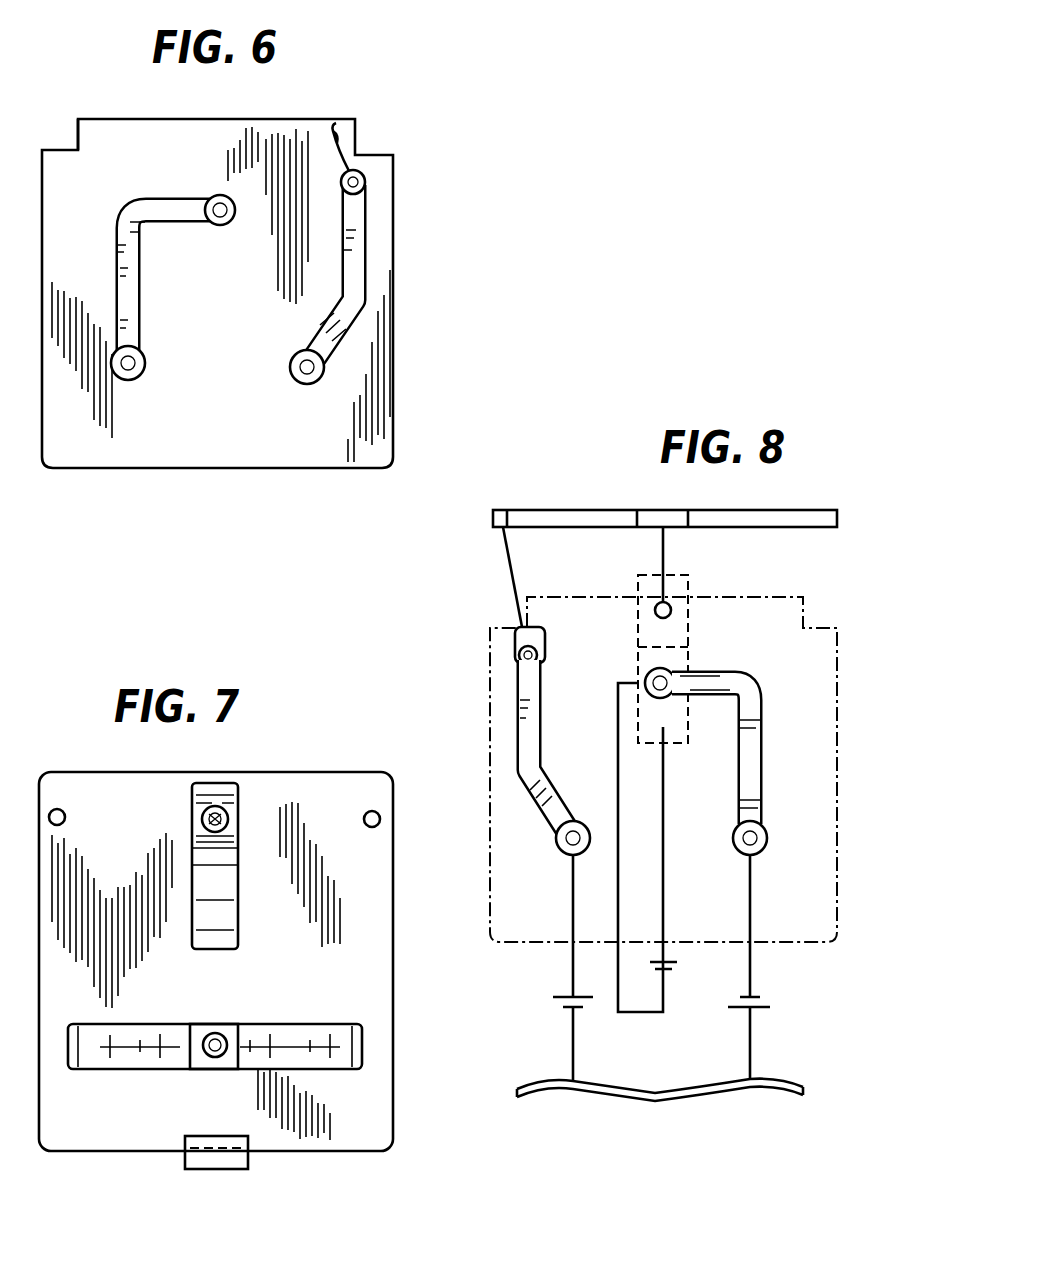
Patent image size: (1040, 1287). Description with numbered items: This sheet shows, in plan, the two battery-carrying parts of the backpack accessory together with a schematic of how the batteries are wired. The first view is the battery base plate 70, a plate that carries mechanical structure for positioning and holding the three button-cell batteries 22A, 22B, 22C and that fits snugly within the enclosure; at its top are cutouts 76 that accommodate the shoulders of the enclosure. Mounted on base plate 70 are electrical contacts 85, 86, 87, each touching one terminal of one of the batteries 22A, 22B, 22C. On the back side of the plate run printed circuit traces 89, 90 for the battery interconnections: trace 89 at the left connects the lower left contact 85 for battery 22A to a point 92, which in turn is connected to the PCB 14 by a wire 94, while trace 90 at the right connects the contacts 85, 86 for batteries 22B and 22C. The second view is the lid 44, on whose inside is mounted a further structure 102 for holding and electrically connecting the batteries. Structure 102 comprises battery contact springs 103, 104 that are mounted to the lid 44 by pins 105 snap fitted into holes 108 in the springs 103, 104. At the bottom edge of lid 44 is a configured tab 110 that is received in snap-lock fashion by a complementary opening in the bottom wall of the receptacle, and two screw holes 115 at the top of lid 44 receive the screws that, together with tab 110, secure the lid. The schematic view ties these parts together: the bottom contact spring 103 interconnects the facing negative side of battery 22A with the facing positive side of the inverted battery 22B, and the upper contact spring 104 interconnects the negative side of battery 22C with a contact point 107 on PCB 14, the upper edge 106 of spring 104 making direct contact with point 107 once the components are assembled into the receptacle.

In FIG. 8, the PCB 14 is at (778, 506).
In FIG. 8, the battery 22A is at (553, 1004).
In FIG. 8, the battery 22B is at (770, 1004).
In FIG. 8, the battery 22C is at (679, 966).
In FIG. 7, the lid 44 is at (399, 990).
In FIG. 8, the lid 44 is at (797, 873).
In FIG. 6, the base plate 70 is at (408, 290).
In FIG. 6, the cutouts 76 is at (78, 134).
In FIG. 6, the electrical contact 85 is at (307, 384).
In FIG. 8, the electrical contact 85 is at (557, 853).
In FIG. 6, the electrical contact 86 is at (136, 376).
In FIG. 8, the electrical contact 86 is at (738, 850).
In FIG. 6, the electrical contact 87 is at (218, 196).
In FIG. 8, the electrical contact 87 is at (650, 676).
In FIG. 6, the printed circuit trace 89 is at (348, 244).
In FIG. 8, the printed circuit trace 89 is at (538, 735).
In FIG. 6, the printed circuit trace 90 is at (140, 297).
In FIG. 8, the printed circuit trace 90 is at (752, 732).
In FIG. 6, the point 92 is at (345, 192).
In FIG. 8, the point 92 is at (519, 655).
In FIG. 6, the wire 94 is at (338, 163).
In FIG. 7, the structure 102 is at (282, 838).
In FIG. 8, the structure 102 is at (722, 620).
In FIG. 7, the bottom contact spring 103 is at (306, 1038).
In FIG. 8, the bottom contact spring 103 is at (610, 1098).
In FIG. 7, the upper contact spring 104 is at (194, 930).
In FIG. 8, the upper contact spring 104 is at (512, 590).
In FIG. 7, the pin 105 is at (221, 833).
In FIG. 7, the upper edge 106 is at (198, 805).
In FIG. 8, the upper edge 106 is at (688, 578).
In FIG. 8, the contact point 107 is at (646, 508).
In FIG. 7, the hole 108 is at (229, 816).
In FIG. 7, the tab 110 is at (230, 1160).
In FIG. 7, the screw hole 115 is at (90, 762).